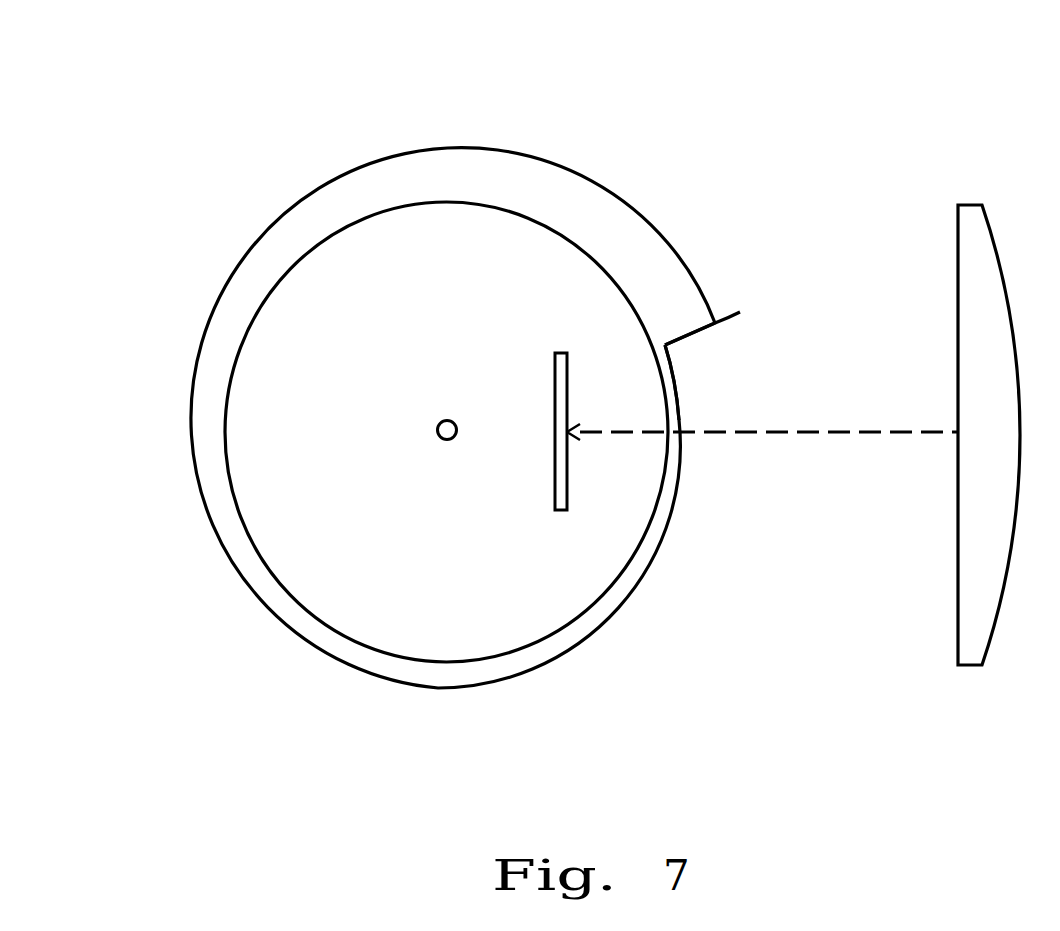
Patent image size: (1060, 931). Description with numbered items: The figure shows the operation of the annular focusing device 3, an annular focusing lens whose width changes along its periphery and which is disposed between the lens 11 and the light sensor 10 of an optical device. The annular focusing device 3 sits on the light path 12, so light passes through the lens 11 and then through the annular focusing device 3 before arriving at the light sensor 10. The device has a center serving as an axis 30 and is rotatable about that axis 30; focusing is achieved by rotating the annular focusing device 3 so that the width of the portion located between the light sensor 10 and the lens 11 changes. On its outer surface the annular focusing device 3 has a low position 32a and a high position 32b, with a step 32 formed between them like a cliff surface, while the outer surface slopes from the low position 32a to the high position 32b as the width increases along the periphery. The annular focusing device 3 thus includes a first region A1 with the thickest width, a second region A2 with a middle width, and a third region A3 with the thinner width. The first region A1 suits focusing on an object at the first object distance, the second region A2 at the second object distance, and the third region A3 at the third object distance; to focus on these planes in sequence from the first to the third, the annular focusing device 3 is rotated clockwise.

The annular focusing device 3 is at (258, 672).
The light sensor 10 is at (522, 382).
The lens 11 is at (967, 158).
The light path 12 is at (833, 433).
The axis 30 is at (410, 414).
The step 32 is at (690, 338).
The low position 32a is at (667, 347).
The high position 32b is at (715, 323).
The first region A1 is at (717, 288).
The second region A2 is at (167, 460).
The third region A3 is at (690, 430).